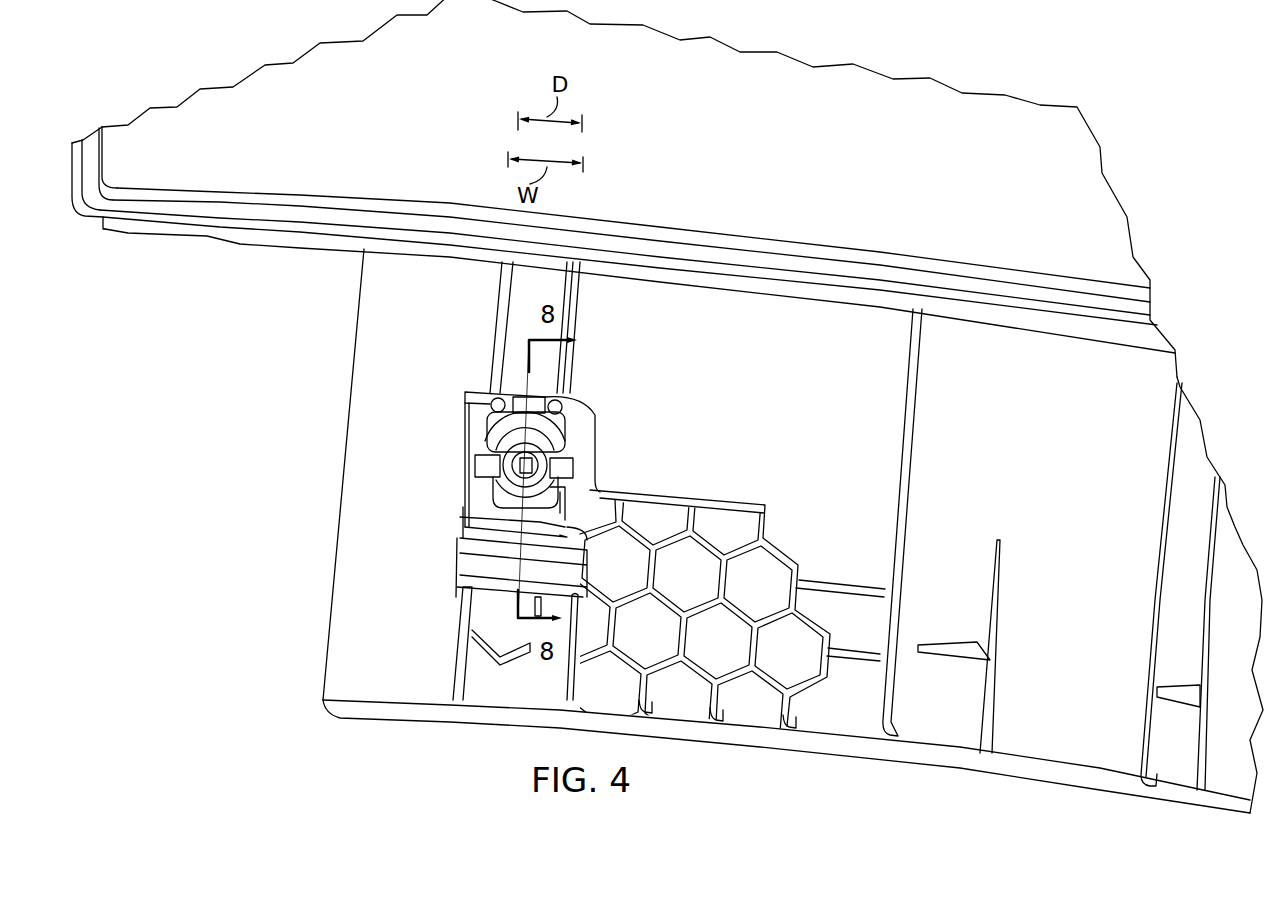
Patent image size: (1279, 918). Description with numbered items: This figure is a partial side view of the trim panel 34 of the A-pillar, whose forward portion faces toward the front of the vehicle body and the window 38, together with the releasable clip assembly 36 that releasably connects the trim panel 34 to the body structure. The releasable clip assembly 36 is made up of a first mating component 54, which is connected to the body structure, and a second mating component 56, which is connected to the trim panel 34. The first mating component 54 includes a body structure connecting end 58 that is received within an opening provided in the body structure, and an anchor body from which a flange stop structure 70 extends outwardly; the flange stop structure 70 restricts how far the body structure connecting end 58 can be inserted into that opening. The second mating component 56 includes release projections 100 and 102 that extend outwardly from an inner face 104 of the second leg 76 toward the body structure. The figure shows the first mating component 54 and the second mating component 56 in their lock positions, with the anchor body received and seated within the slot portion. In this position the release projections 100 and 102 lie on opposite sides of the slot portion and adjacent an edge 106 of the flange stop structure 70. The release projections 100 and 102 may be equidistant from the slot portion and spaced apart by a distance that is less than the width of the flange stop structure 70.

The trim panel 34 is at (1209, 410).
The releasable clip assembly 36 is at (477, 358).
The window 38 is at (1005, 125).
The first mating component 54 is at (572, 433).
The second mating component 56 is at (508, 520).
The body structure connecting end 58 is at (522, 461).
The flange stop structure 70 is at (500, 494).
The second leg 76 is at (483, 444).
The release projection 100 is at (490, 404).
The release projection 102 is at (565, 407).
The inner face 104 is at (583, 503).
The edge 106 is at (514, 402).